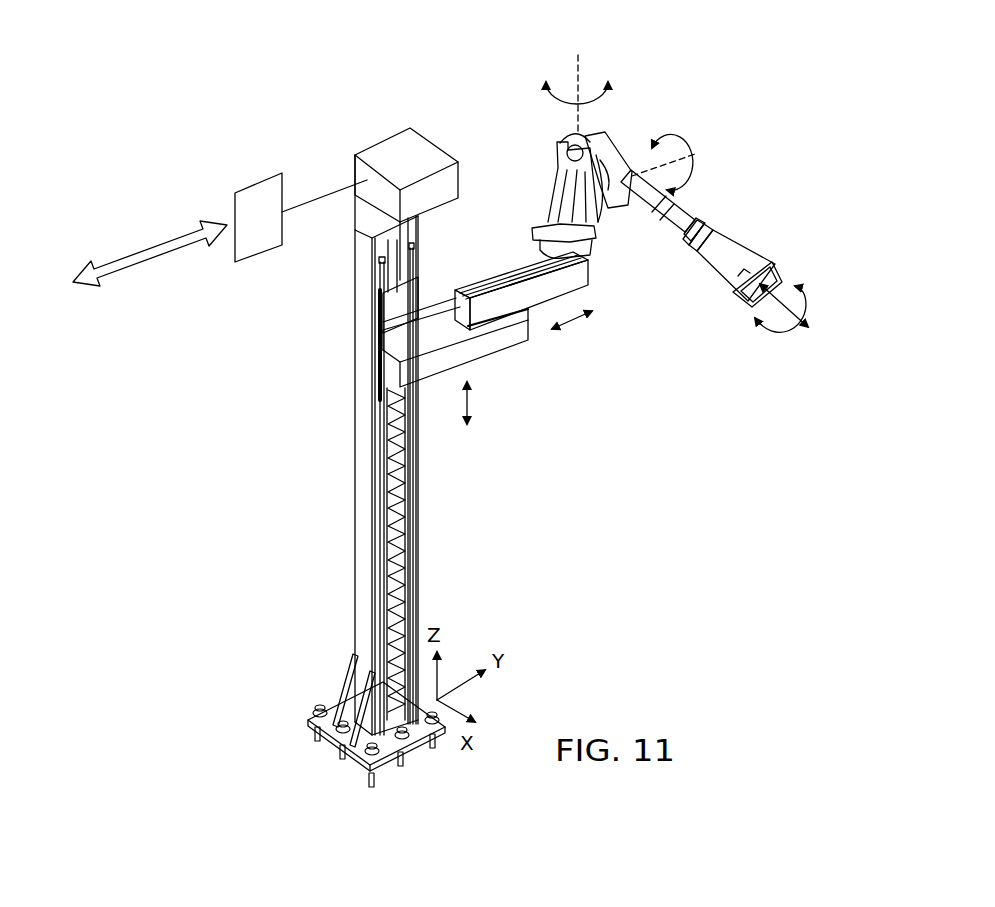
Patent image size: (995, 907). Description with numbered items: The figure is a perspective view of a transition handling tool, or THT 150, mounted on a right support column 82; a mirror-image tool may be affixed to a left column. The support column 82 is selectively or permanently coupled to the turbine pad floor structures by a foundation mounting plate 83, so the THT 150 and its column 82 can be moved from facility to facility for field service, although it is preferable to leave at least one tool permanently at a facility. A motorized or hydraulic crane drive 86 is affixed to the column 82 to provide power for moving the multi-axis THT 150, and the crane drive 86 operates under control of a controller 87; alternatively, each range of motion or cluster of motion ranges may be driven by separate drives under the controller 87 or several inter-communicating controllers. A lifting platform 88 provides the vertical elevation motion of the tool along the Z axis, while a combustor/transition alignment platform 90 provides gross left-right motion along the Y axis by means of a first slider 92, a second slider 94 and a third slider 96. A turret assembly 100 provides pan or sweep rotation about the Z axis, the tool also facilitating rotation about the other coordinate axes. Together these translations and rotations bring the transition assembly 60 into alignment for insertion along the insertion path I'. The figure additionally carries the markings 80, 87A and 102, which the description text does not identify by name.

The transition assembly 60 is at (742, 246).
The robot positioning system 80 is at (205, 545).
The right support column 82 is at (355, 490).
The foundation mounting plate 83 is at (336, 708).
The crane drive 86 is at (355, 172).
The controller 87 is at (250, 208).
The direction of movement 87A is at (165, 258).
The lifting platform 88 is at (383, 330).
The combustor/transition alignment platform 90 is at (502, 367).
The first slider 92 is at (438, 366).
The second slider 94 is at (497, 302).
The third slider 96 is at (578, 250).
The turret assembly 100 is at (592, 160).
The robot base 102 is at (583, 196).
The transition handling tool (THT) 150 is at (622, 140).